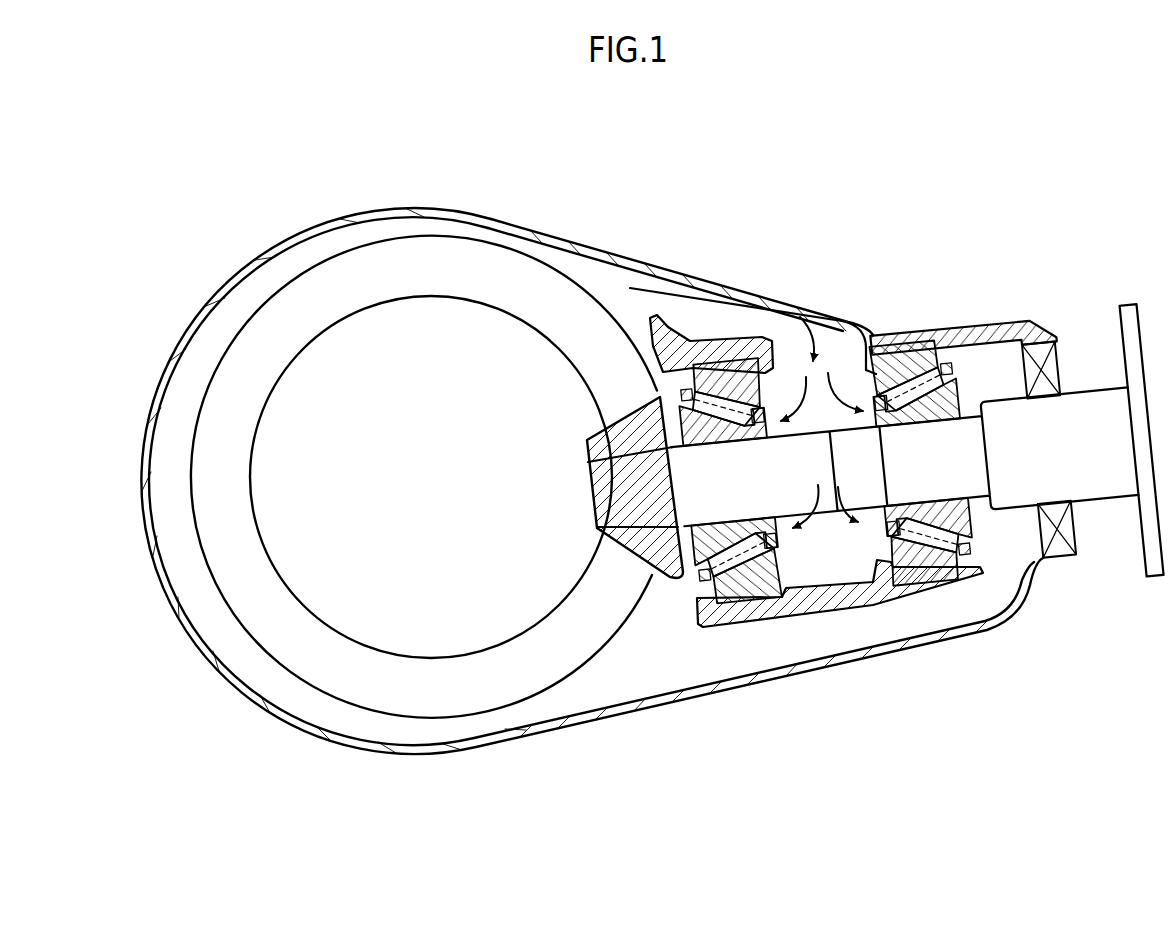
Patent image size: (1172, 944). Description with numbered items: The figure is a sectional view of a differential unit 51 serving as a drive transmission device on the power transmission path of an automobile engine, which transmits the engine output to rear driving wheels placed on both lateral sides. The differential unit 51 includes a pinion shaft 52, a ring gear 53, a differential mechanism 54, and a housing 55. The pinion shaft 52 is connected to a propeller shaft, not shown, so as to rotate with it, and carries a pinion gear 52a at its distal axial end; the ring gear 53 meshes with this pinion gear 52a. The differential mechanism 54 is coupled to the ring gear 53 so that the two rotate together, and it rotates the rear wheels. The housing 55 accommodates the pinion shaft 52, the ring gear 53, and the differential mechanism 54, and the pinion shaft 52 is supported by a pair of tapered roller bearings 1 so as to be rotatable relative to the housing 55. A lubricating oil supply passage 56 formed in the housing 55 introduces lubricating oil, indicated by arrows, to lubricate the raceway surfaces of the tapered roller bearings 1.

The differential unit 51 is at (278, 182).
The pinion shaft 52 is at (1097, 388).
The pinion gear 52a is at (661, 580).
The ring gear 53 is at (517, 277).
The differential mechanism 54 is at (433, 352).
The housing 55 is at (616, 262).
The lubricating oil supply passage 56 is at (783, 316).
The tapered roller bearing 1 is at (715, 362).